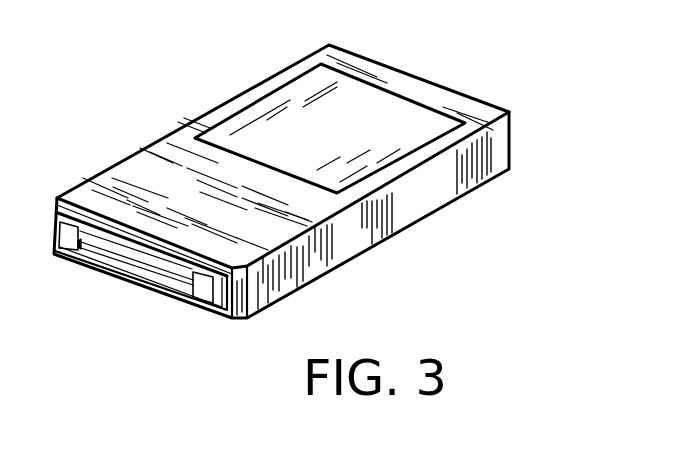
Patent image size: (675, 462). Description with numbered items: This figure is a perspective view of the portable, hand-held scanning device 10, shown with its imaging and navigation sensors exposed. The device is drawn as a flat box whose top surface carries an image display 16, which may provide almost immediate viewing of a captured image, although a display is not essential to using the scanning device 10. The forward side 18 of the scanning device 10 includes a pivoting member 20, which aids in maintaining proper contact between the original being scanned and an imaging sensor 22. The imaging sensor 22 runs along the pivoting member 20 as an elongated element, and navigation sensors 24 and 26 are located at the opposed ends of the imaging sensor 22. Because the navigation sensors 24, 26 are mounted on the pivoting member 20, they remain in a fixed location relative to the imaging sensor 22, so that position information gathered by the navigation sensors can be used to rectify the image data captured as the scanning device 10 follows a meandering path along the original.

The scanning device 10 is at (130, 168).
The image display 16 is at (296, 94).
The forward side 18 is at (58, 211).
The pivoting member 20 is at (137, 279).
The imaging sensor 22 is at (178, 283).
The navigation sensor 24 is at (65, 254).
The navigation sensor 26 is at (200, 302).